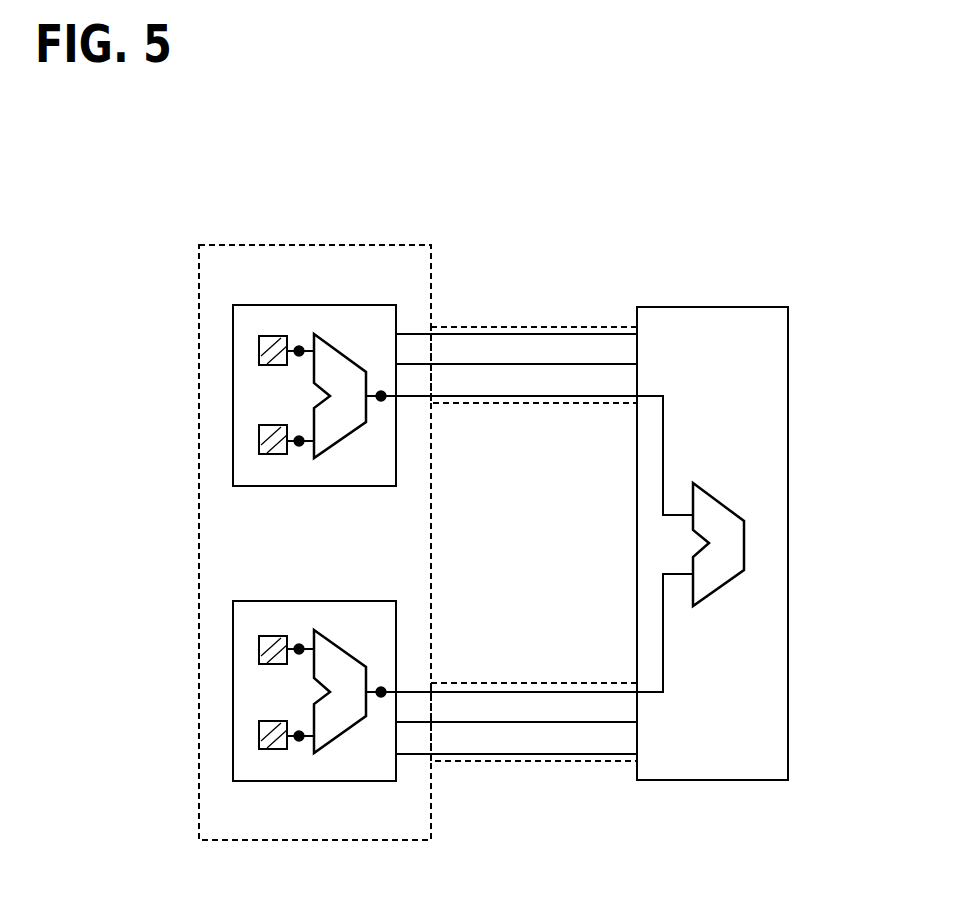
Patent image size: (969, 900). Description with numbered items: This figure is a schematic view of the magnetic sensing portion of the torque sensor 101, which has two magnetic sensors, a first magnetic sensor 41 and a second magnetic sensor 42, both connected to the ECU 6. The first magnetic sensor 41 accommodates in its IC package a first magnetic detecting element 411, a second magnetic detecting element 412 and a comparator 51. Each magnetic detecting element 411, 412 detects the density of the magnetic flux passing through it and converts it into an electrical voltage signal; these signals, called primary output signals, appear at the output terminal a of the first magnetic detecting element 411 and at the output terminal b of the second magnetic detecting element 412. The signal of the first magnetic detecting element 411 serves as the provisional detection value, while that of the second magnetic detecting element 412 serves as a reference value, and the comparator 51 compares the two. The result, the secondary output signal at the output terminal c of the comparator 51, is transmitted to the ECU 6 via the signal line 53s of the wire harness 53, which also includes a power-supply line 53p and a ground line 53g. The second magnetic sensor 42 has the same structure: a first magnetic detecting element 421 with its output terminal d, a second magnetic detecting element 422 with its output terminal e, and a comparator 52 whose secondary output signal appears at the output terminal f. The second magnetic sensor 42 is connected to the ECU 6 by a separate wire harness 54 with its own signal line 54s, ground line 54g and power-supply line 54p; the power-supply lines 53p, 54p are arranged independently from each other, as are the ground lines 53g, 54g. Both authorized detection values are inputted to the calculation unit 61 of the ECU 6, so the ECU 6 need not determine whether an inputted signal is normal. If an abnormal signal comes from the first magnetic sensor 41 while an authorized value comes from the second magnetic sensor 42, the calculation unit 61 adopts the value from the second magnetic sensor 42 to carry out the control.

The torque sensor 101 is at (304, 245).
The first magnetic sensor 41 is at (260, 305).
The first magnetic detecting element 411 is at (263, 343).
The second magnetic detecting element 412 is at (263, 433).
The comparator 51 is at (338, 365).
The output terminal a is at (299, 346).
The output terminal b is at (299, 446).
The output terminal c is at (381, 401).
The second magnetic sensor 42 is at (260, 601).
The first magnetic detecting element 421 is at (263, 641).
The second magnetic detecting element 422 is at (263, 729).
The comparator 52 is at (333, 657).
The output terminal d is at (299, 644).
The output terminal e is at (299, 741).
The output terminal f is at (381, 697).
The wire harness 53 is at (588, 327).
The power-supply line 53p is at (458, 327).
The ground line 53g is at (525, 364).
The signal line 53s is at (508, 400).
The wire harness 54 is at (587, 761).
The signal line 54s is at (473, 691).
The ground line 54g is at (523, 722).
The power-supply line 54p is at (466, 761).
The ECU 6 is at (725, 307).
The calculation unit 61 is at (728, 510).